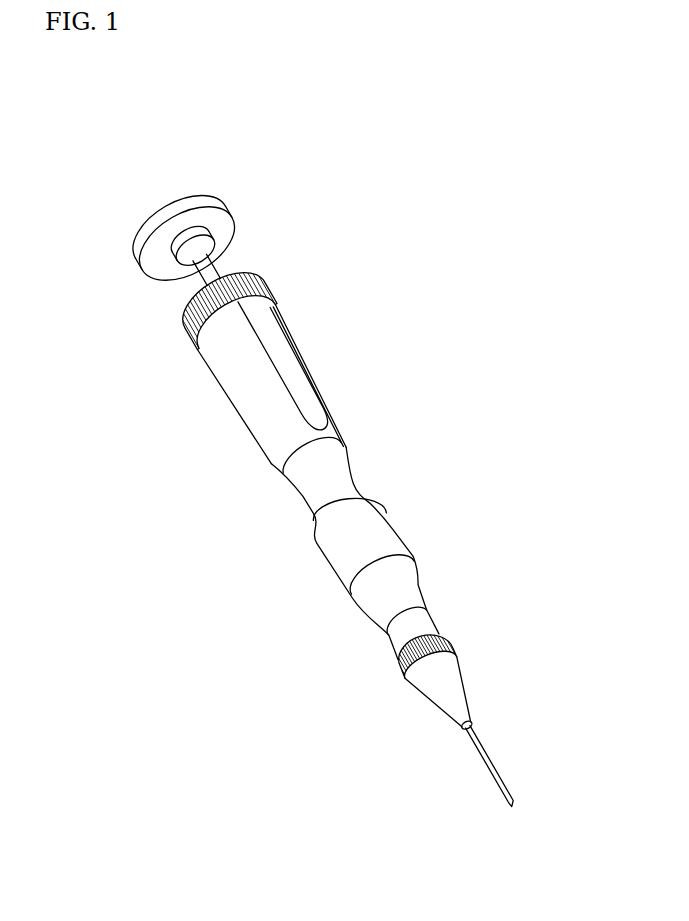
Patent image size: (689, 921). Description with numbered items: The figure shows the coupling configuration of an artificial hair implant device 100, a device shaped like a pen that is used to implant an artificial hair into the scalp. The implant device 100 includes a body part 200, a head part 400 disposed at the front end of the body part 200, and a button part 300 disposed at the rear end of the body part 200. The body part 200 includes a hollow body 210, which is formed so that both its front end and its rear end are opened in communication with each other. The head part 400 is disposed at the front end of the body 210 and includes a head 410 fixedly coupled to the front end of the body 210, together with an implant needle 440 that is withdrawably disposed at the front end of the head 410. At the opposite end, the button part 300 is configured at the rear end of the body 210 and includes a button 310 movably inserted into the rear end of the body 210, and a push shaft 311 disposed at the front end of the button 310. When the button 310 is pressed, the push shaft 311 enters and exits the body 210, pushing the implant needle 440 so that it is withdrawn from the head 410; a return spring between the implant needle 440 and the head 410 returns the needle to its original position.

The artificial hair implant device 100 is at (324, 148).
The body part 200 is at (356, 666).
The hollow body 210 is at (342, 472).
The button part 300 is at (179, 352).
The button 310 is at (196, 197).
The push shaft 311 is at (209, 267).
The head part 400 is at (446, 824).
The head 410 is at (458, 682).
The implant needle 440 is at (490, 771).